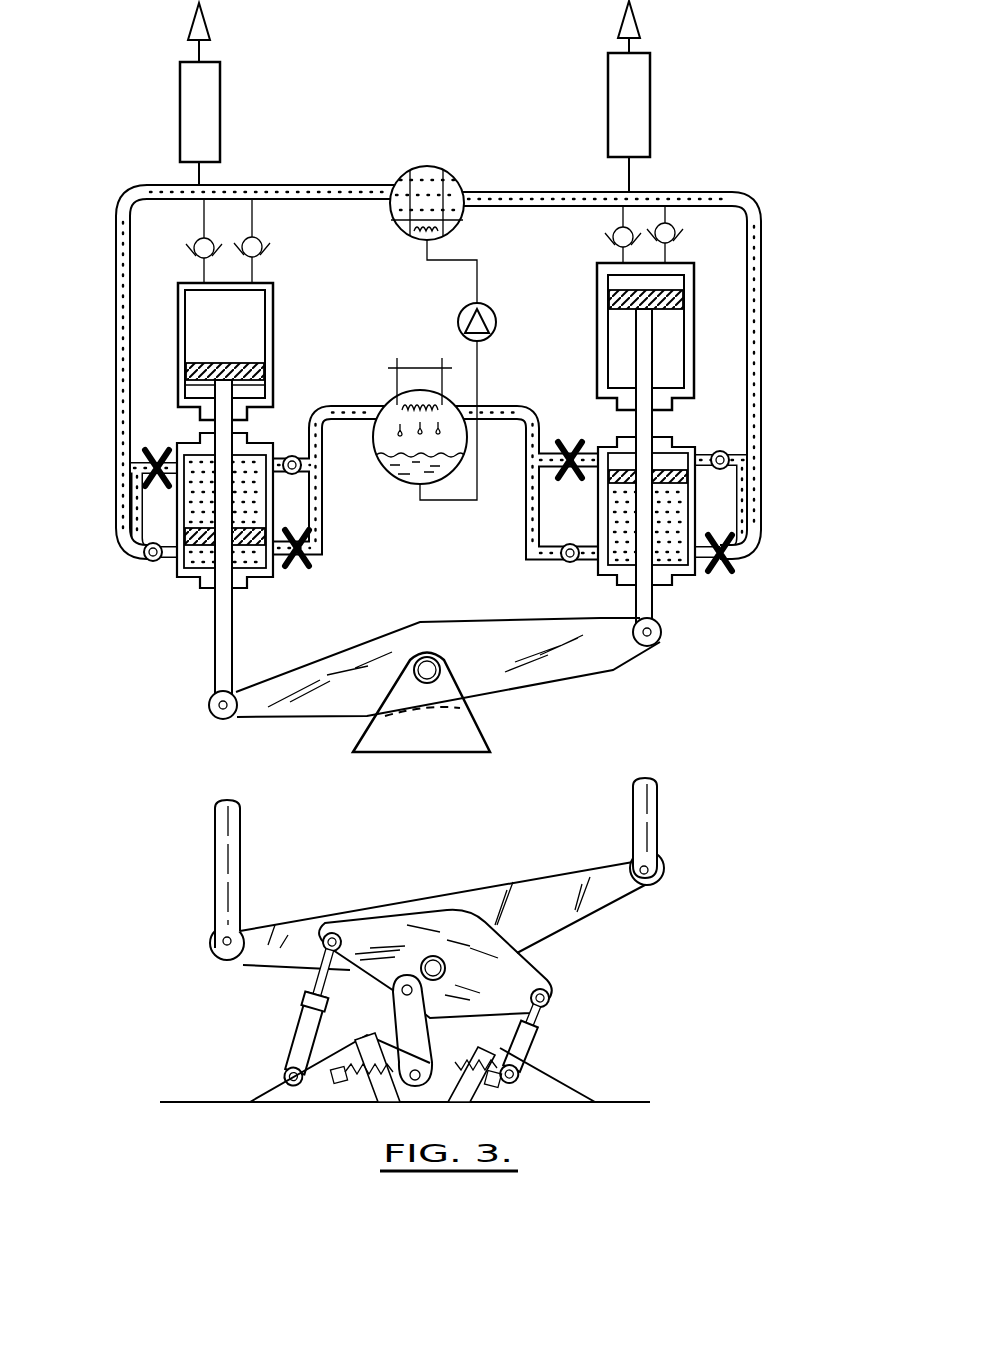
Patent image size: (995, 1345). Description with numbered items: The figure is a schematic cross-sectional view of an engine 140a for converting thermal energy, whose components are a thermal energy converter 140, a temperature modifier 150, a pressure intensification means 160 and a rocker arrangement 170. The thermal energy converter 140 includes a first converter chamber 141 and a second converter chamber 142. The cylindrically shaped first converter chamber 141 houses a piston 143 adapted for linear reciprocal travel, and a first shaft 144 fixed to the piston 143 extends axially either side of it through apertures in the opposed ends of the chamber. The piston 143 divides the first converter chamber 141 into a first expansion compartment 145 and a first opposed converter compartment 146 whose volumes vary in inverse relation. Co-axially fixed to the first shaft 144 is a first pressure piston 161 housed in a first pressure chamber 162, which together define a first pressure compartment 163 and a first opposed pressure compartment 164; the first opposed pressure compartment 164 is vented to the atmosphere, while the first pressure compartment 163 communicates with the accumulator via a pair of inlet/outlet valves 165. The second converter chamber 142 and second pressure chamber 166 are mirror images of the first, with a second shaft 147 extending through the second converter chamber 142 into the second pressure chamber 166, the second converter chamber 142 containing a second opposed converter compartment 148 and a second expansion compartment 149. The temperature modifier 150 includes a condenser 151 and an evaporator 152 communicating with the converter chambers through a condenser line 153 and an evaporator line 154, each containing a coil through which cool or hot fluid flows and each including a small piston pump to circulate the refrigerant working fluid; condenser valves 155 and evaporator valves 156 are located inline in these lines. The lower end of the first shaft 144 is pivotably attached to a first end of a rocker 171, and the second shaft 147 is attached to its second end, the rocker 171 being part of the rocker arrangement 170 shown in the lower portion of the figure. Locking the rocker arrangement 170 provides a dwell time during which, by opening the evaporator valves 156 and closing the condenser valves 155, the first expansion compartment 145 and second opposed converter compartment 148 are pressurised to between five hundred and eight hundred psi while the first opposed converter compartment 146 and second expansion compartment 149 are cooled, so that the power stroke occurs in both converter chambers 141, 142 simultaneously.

The engine 140a is at (90, 114).
The thermal energy converter 140 is at (150, 677).
The first converter chamber 141 is at (163, 434).
The second converter chamber 142 is at (708, 430).
The piston 143 is at (178, 566).
The first shaft 144 is at (214, 632).
The first expansion compartment 145 is at (244, 590).
The first opposed converter compartment 146 is at (185, 505).
The second shaft 147 is at (653, 600).
The second opposed converter compartment 148 is at (673, 460).
The second expansion compartment 149 is at (609, 510).
The temperature modifier 150 is at (462, 518).
The condenser 151 is at (391, 350).
The evaporator 152 is at (452, 168).
The condenser line 153 is at (506, 405).
The evaporator line 154 is at (550, 190).
The condenser valves 155 is at (292, 455).
The evaporator valves 156 is at (146, 452).
The pressure intensification means 160 is at (124, 269).
The first pressure piston 161 is at (203, 360).
The first pressure chamber 162 is at (178, 337).
The first pressure compartment 163 is at (202, 305).
The first opposed pressure compartment 164 is at (255, 388).
The inlet/outlet valves 165 is at (192, 243).
The second pressure chamber 166 is at (696, 300).
The rocker arrangement 170 is at (176, 912).
The rocker 171 is at (598, 648).